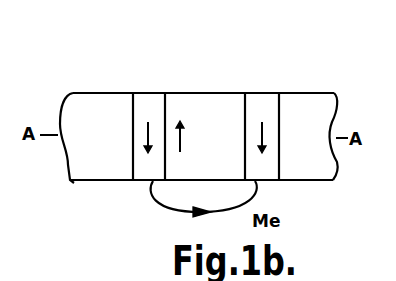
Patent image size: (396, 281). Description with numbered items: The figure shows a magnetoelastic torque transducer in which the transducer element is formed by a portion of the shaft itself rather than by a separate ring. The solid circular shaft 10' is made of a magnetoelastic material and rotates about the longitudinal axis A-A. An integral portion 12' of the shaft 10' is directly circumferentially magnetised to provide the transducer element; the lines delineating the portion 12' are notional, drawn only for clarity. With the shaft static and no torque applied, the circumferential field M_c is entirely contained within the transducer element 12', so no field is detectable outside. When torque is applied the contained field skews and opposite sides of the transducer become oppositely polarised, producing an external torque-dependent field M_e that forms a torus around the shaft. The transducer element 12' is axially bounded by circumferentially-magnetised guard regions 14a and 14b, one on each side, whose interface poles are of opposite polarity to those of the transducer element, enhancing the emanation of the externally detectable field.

The solid circular shaft 10' is at (199, 106).
The guard region 14a is at (152, 99).
The transducer element 12' is at (205, 91).
The guard region 14b is at (262, 100).